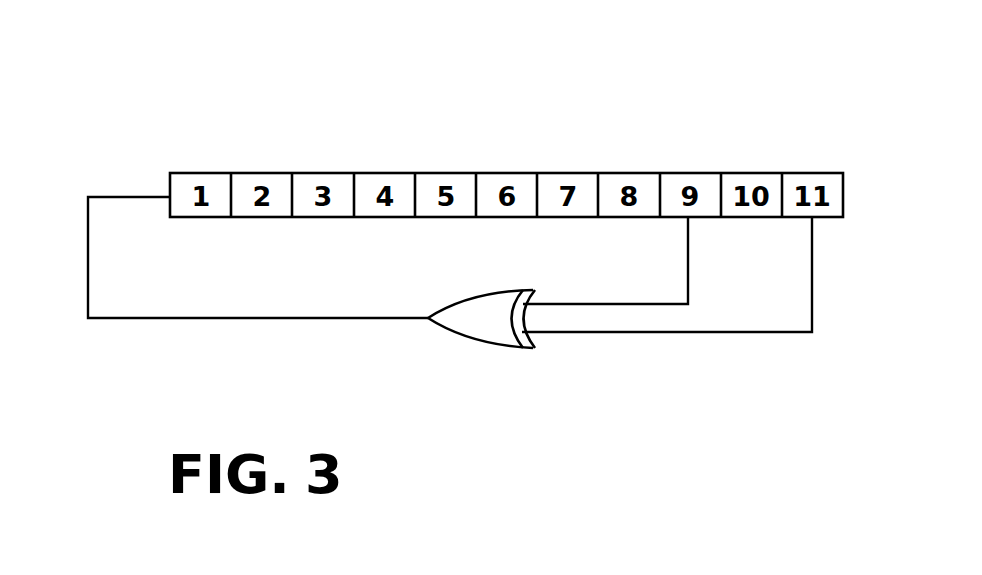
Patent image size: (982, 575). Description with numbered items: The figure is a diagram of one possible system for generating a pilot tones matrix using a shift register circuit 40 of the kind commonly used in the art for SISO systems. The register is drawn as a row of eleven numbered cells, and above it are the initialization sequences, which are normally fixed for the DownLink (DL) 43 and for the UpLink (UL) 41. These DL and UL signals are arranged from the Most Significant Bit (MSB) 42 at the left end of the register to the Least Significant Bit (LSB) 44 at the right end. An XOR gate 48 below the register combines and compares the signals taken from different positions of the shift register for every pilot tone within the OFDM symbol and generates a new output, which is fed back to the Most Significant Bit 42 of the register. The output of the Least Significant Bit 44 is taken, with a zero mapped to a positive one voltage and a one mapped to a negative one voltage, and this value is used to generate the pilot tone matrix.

The shift register circuit 40 is at (163, 351).
The UpLink initialization sequence 41 is at (120, 155).
The Most Significant Bit 42 is at (425, 75).
The DownLink initialization sequence 43 is at (120, 112).
The Least Significant Bit 44 is at (789, 78).
The XOR gate 48 is at (507, 354).